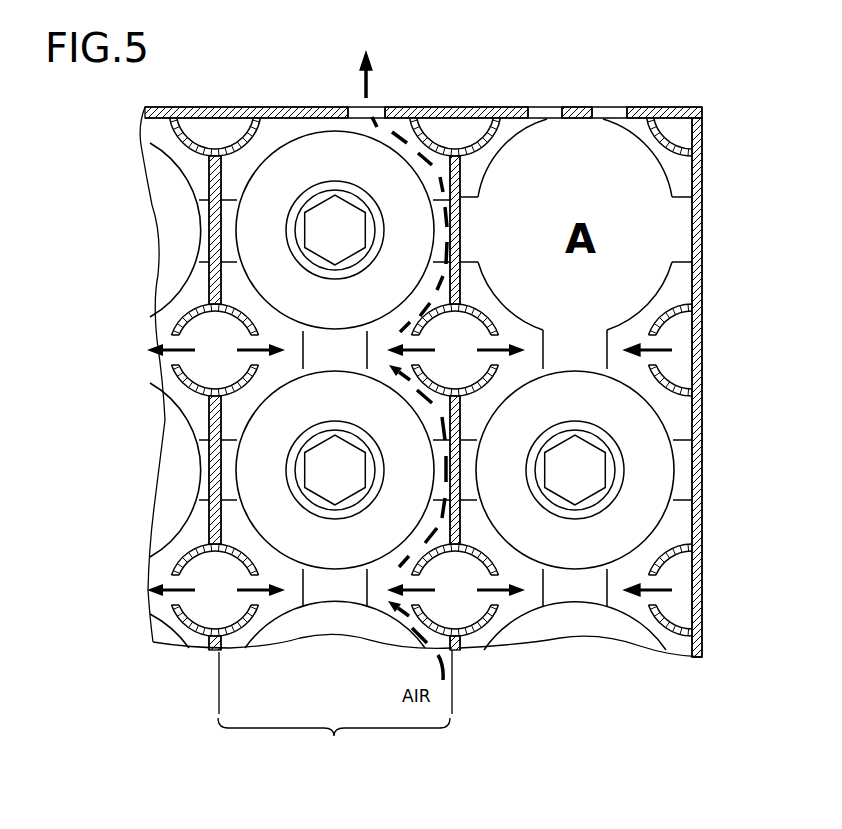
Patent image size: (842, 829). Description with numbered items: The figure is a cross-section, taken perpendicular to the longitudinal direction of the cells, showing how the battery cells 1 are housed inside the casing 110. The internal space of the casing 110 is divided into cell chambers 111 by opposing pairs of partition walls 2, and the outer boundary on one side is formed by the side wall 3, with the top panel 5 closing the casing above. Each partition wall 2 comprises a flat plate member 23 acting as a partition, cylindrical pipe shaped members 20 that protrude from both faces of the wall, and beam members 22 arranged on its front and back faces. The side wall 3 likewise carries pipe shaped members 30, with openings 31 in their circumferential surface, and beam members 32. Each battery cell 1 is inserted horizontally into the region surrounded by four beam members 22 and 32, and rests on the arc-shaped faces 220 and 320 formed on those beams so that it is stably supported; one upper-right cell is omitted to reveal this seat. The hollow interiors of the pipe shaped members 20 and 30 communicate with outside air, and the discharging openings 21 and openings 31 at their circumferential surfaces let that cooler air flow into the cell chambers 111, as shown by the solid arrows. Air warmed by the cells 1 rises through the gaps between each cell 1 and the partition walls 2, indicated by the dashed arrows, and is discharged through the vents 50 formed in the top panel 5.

The battery cell 1 is at (268, 249).
The partition wall 2 is at (211, 652).
The side wall 3 is at (703, 517).
The top panel 5 is at (461, 105).
The pipe shaped member 20 is at (482, 627).
The discharging opening 21 is at (498, 597).
The beam member 22 is at (522, 133).
The flat plate member 23 is at (212, 417).
The pipe shaped member 30 is at (678, 383).
The opening 31 is at (660, 337).
The beam member 32 is at (682, 277).
The vent 50 is at (303, 106).
The casing 110 is at (706, 124).
The cell chamber 111 is at (335, 708).
The arc-shaped face 220 is at (503, 158).
The arc-shaped face 320 is at (650, 158).